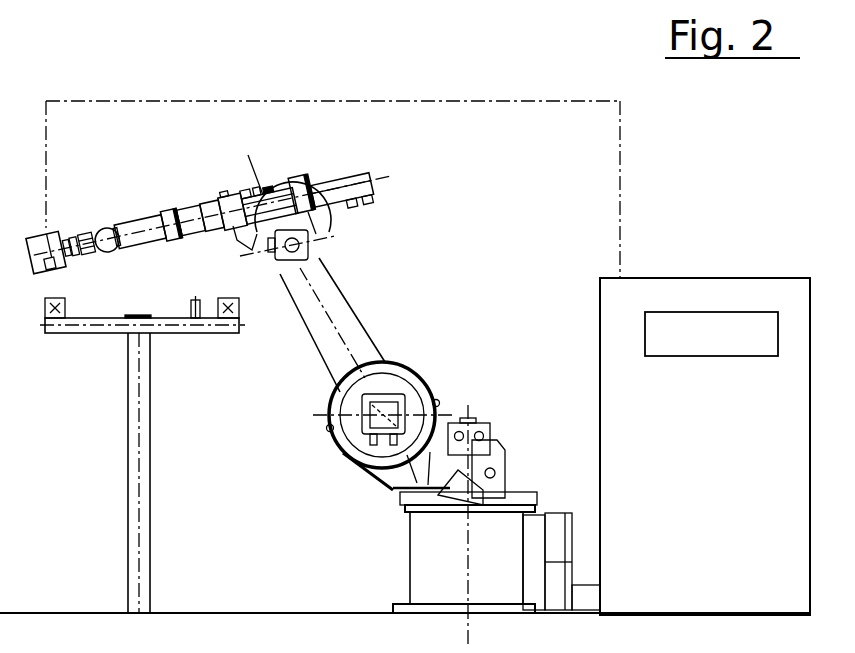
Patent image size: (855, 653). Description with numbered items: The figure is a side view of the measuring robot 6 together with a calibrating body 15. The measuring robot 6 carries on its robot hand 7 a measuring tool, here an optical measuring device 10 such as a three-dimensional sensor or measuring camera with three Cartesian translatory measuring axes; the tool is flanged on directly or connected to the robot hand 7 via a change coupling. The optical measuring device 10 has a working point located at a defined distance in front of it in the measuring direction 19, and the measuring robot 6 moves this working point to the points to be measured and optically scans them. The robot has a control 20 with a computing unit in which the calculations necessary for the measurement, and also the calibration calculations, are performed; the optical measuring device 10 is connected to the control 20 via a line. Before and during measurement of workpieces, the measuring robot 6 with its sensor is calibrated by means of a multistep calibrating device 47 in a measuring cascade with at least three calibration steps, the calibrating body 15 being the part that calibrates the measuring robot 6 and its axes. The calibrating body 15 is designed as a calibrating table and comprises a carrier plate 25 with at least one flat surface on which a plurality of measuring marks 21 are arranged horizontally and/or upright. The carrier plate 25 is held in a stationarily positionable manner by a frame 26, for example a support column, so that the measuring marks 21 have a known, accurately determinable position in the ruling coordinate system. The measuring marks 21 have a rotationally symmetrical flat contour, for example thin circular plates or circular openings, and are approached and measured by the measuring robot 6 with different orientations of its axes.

The measuring robot 6 is at (345, 310).
The robot hand 7 is at (84, 238).
The optical measuring device 10 is at (47, 237).
The calibrating body 15 is at (130, 434).
The measuring direction 19 is at (48, 298).
The control 20 is at (720, 290).
The measuring marks 21 is at (222, 300).
The carrier plate 25 is at (187, 335).
The frame 26 is at (125, 476).
The multistep calibrating device 47 is at (210, 461).